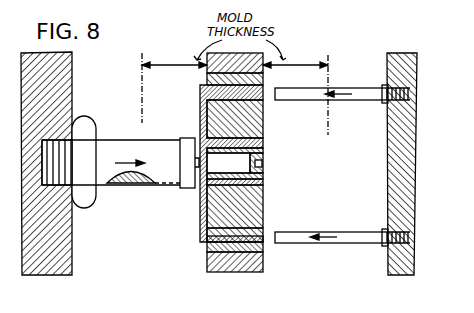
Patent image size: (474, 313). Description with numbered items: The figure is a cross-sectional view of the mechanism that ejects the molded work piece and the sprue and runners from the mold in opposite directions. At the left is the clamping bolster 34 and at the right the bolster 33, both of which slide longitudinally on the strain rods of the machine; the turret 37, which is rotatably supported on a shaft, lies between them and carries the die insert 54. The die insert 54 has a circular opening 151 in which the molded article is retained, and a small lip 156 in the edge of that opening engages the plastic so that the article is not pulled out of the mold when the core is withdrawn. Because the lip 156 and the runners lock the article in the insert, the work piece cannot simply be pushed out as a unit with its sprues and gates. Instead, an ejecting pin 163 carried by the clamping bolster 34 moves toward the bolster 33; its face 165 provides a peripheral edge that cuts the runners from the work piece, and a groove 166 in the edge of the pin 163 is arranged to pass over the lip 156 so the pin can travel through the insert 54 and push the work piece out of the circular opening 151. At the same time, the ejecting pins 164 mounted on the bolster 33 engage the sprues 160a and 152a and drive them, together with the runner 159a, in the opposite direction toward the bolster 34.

The bolster 33 is at (414, 144).
The clamping bolster 34 is at (62, 79).
The turret 37 is at (258, 270).
The die insert 54 is at (263, 198).
The circular opening 151 is at (263, 182).
The sprue 152a is at (263, 234).
The lip 156 is at (207, 184).
The runner 159a is at (200, 111).
The sprue 160a is at (263, 98).
The ejecting pin 163 is at (116, 140).
The ejecting pins 164 is at (351, 98).
The face 165 is at (197, 161).
The groove 166 is at (133, 185).